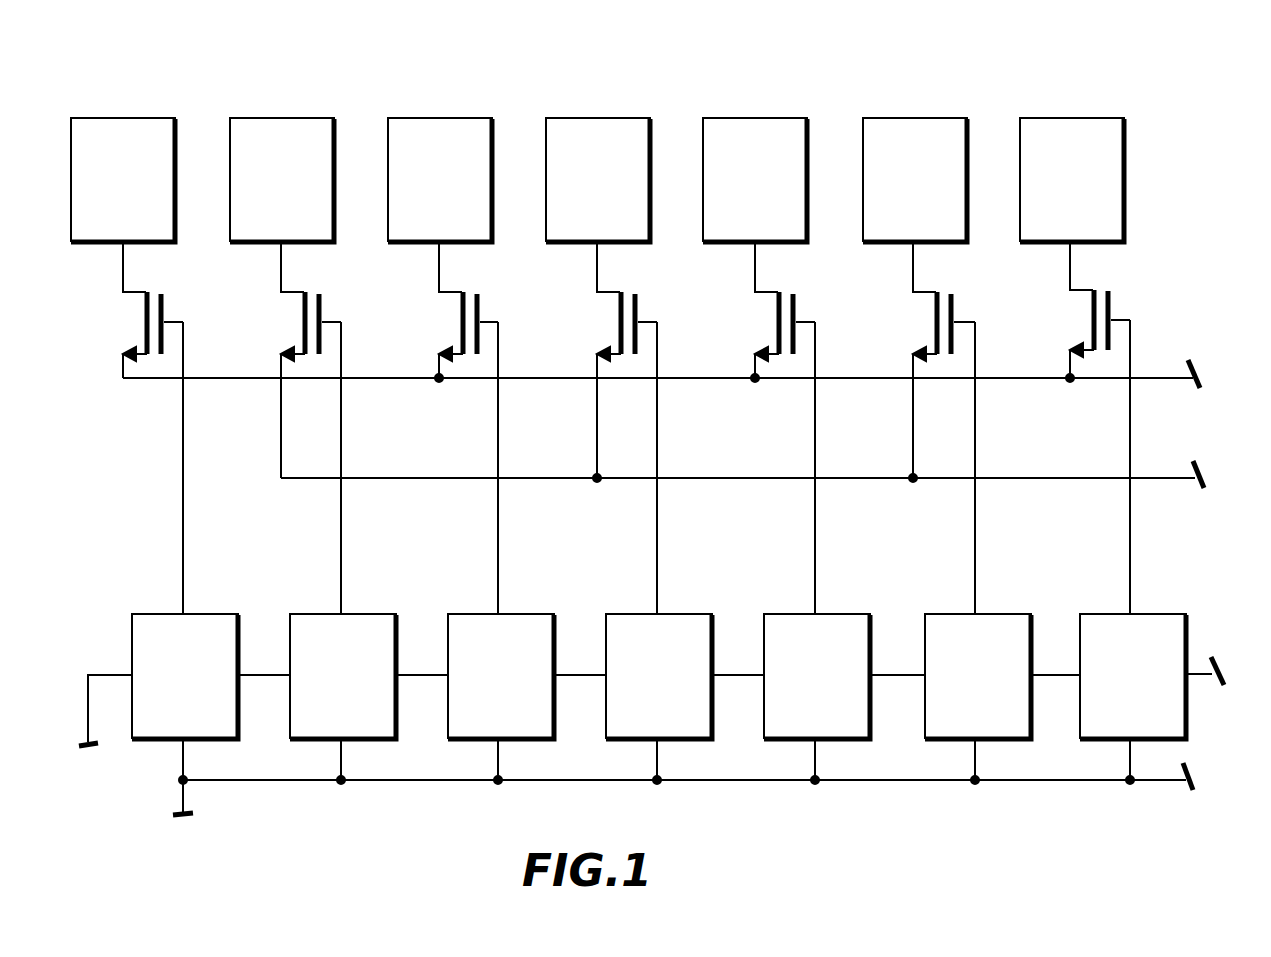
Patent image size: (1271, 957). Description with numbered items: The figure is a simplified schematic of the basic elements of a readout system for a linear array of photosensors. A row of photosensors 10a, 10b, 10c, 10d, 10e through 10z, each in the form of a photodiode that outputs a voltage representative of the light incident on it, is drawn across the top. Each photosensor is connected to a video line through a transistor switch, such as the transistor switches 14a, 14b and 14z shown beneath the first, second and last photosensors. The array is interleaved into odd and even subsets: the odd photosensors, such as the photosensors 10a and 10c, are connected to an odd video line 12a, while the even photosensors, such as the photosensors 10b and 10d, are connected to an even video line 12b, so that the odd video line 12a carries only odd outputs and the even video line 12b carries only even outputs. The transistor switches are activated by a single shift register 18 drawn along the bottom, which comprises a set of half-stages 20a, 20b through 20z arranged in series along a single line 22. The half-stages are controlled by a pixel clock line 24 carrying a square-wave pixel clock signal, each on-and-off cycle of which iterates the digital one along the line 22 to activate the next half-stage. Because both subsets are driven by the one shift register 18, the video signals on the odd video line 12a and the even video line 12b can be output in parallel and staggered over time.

The photosensor 10a is at (133, 132).
The photosensor 10b is at (294, 130).
The photosensor 10c is at (452, 126).
The photosensor 10d is at (611, 126).
The photosensor 10e is at (771, 126).
The photosensor 10z is at (1077, 130).
The transistor switch 14a is at (145, 328).
The transistor switch 14b is at (296, 322).
The transistor switch 14z is at (1112, 298).
The odd video line 12a is at (1164, 375).
The even video line 12b is at (1164, 474).
The half-stage 20a is at (213, 630).
The half-stage 20b is at (367, 628).
The half-stage 20z is at (1165, 631).
The line 22 is at (95, 672).
The pixel clock line 24 is at (300, 783).
The shift register 18 is at (1152, 752).